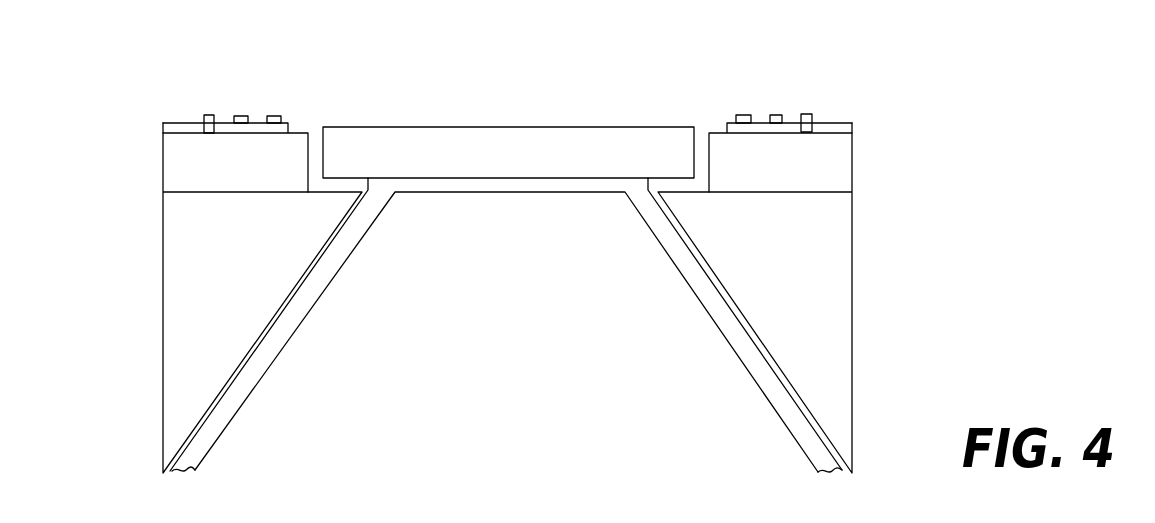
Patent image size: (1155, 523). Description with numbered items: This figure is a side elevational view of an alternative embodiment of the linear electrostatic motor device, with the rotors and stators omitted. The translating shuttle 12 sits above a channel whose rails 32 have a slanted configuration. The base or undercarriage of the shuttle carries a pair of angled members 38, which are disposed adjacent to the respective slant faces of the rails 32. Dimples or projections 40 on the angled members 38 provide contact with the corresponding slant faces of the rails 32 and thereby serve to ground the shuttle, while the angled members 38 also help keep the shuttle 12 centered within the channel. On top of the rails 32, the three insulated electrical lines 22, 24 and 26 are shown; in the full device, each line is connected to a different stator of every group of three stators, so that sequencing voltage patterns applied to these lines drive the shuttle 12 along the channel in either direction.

The translating shuttle 12 is at (556, 134).
The electrical line 22 is at (210, 113).
The electrical line 24 is at (242, 115).
The electrical line 26 is at (276, 115).
The rails 32 is at (205, 273).
The angled members 38 is at (297, 333).
The dimples or projections 40 is at (262, 343).